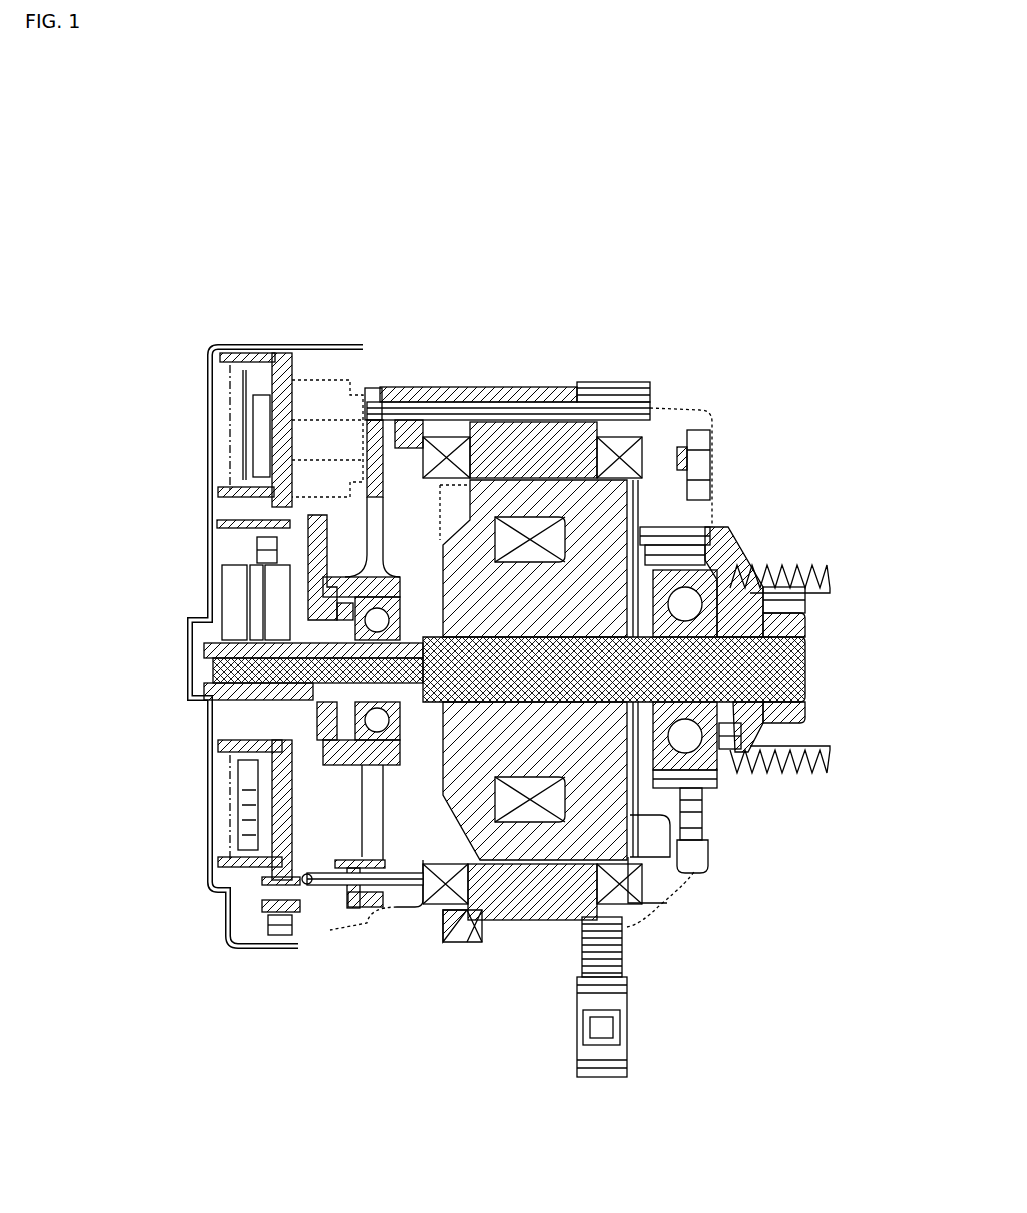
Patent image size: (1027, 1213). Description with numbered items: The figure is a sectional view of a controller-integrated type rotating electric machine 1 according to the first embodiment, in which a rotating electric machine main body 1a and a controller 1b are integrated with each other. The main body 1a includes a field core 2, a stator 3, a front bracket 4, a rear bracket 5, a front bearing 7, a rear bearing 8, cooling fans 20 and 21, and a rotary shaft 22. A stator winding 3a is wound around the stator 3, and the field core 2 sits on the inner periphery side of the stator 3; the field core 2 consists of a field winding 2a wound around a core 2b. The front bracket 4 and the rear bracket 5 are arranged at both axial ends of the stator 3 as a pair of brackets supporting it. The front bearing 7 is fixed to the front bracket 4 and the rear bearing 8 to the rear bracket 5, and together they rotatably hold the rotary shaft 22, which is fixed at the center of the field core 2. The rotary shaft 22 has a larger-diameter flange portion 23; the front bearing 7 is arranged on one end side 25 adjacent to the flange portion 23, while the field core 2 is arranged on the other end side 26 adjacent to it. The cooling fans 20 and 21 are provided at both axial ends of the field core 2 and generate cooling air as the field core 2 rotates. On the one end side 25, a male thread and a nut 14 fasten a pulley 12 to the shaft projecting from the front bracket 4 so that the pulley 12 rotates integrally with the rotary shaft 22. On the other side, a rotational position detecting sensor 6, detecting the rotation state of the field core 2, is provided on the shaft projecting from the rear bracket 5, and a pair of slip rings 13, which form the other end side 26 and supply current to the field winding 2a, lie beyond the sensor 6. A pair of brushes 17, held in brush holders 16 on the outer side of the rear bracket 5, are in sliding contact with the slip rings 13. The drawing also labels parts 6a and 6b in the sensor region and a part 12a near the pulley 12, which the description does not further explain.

The controller-integrated type rotating electric machine 1 is at (663, 218).
The rotating electric machine main body 1a is at (812, 277).
The controller 1b is at (357, 277).
The field core 2 is at (547, 315).
The field winding 2a is at (508, 540).
The core 2b is at (588, 523).
The stator 3 is at (573, 448).
The stator winding 3a is at (607, 460).
The front bracket 4 is at (685, 483).
The rear bracket 5 is at (428, 392).
The rotational position detecting sensor 6 is at (135, 815).
The sensor rotor 6a is at (328, 730).
The sensor stator 6b is at (327, 702).
The front bearing 7 is at (665, 582).
The rear bearing 8 is at (362, 728).
The pulley 12 is at (752, 595).
The fan boss 12a is at (747, 625).
The slip rings 13 is at (213, 688).
The nut 14 is at (767, 708).
The brush holders 16 is at (216, 610).
The brushes 17 is at (230, 565).
The cooling fan 20 is at (637, 837).
The cooling fan 21 is at (408, 843).
The rotary shaft 22 is at (630, 712).
The flange portion 23 is at (692, 670).
The one end side 25 is at (808, 670).
The another end side 26 is at (216, 665).